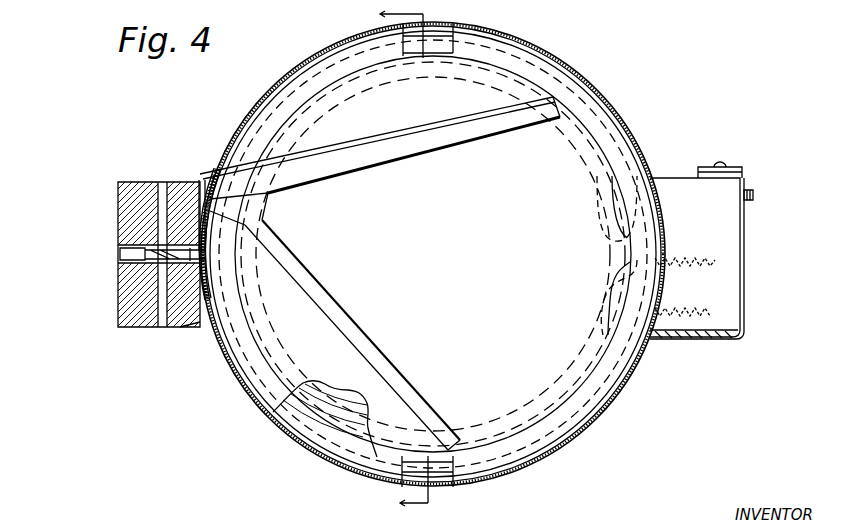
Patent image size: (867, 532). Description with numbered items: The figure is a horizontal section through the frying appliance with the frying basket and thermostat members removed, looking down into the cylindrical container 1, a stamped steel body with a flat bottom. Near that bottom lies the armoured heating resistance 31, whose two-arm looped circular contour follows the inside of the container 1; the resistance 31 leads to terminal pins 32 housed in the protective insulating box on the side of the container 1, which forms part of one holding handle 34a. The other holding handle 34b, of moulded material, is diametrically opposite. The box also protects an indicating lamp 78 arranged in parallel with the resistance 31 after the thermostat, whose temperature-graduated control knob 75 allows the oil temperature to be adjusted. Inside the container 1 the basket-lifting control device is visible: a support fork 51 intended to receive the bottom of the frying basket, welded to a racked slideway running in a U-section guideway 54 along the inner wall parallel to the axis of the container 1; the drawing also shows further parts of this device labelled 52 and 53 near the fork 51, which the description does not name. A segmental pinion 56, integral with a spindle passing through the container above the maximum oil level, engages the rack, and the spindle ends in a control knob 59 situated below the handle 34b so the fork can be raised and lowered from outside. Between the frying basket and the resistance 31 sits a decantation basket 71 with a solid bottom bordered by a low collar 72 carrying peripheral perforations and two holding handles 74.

The cylindrical container 1 is at (552, 450).
The heating resistance 31 is at (348, 425).
The terminal pins 32 is at (681, 268).
The holding handle 34a is at (727, 308).
The holding handle 34b is at (180, 328).
The support fork 51 is at (392, 160).
The vane 52 is at (262, 197).
The shaft 53 is at (207, 177).
The guideway with U-section 54 is at (211, 170).
The segmental pinion 56 is at (180, 183).
The control knob 59 is at (128, 300).
The decantation basket 71 is at (617, 383).
The low collar 72 is at (597, 410).
The holding handles 74 is at (490, 33).
The control knob 75 is at (750, 201).
The indicating lamp 78 is at (721, 162).